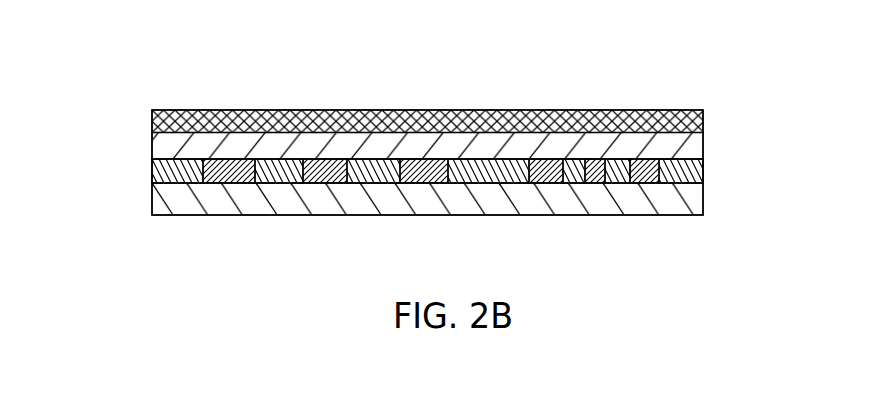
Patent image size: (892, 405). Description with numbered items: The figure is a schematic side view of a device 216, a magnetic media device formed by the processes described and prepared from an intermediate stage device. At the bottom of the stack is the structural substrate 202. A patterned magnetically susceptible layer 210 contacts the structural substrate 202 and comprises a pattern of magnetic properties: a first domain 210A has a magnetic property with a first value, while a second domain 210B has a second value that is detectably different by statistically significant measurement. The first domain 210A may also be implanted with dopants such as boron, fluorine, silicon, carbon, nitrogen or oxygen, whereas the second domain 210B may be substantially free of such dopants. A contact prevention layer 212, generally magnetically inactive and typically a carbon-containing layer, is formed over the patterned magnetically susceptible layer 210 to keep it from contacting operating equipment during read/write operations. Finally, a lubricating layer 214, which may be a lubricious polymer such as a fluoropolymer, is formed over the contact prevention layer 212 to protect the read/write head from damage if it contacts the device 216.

The structural substrate 202 is at (703, 193).
The patterned magnetically susceptible layer 210 is at (429, 166).
The first domain 210A is at (152, 167).
The second domain 210B is at (643, 158).
The contact prevention layer 212 is at (703, 137).
The lubricating layer 214 is at (703, 115).
The device 216 is at (429, 118).